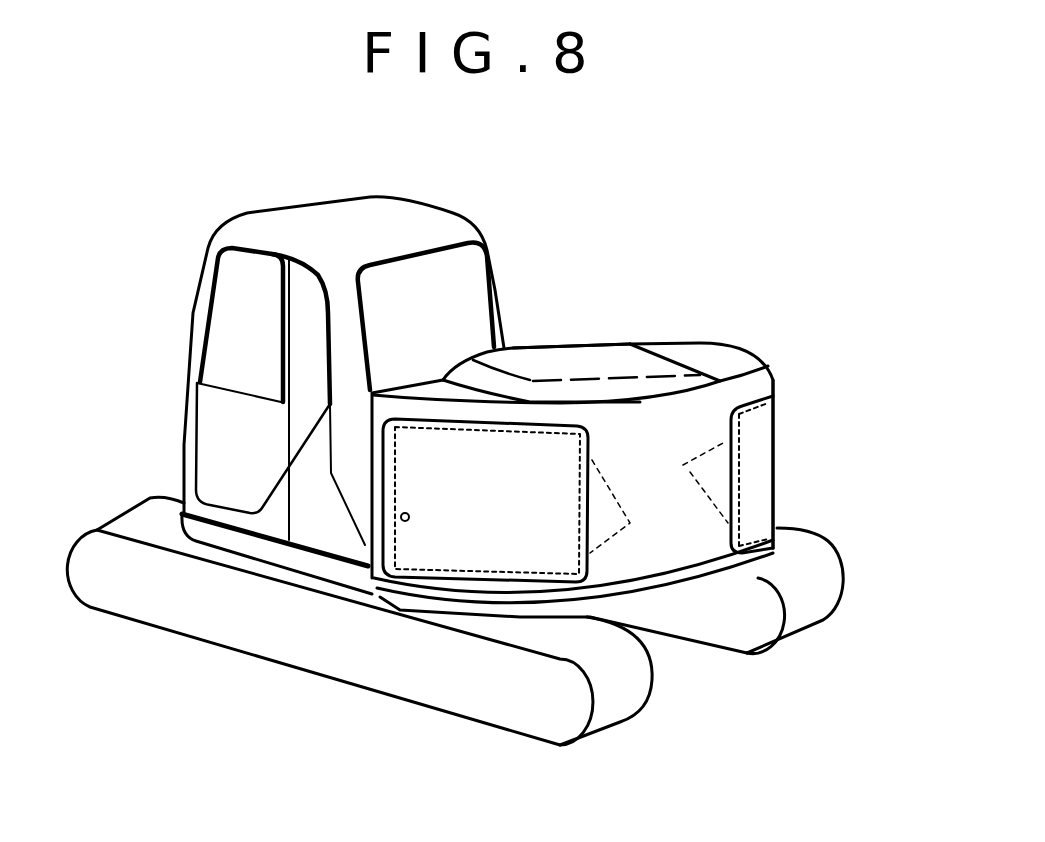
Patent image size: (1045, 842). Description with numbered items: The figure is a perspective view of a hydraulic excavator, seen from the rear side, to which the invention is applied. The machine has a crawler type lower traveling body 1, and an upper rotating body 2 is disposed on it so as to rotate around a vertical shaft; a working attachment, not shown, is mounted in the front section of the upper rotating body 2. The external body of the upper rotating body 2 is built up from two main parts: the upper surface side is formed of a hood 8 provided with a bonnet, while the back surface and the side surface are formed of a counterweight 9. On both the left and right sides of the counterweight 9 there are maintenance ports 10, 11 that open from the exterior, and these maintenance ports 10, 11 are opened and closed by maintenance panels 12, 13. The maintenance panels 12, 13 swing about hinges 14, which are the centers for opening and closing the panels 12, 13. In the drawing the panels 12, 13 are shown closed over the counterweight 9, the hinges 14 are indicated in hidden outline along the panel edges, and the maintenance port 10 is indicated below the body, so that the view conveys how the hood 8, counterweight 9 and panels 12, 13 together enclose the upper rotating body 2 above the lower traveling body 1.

The lower traveling body 1 is at (262, 668).
The upper rotating body 2 is at (518, 276).
The hood 8 is at (627, 353).
The counterweight 9 is at (707, 560).
The maintenance port 10 is at (428, 590).
The maintenance port 11 is at (770, 402).
The maintenance panel 12 is at (537, 562).
The maintenance panel 13 is at (763, 497).
The hinge 14 is at (642, 530).